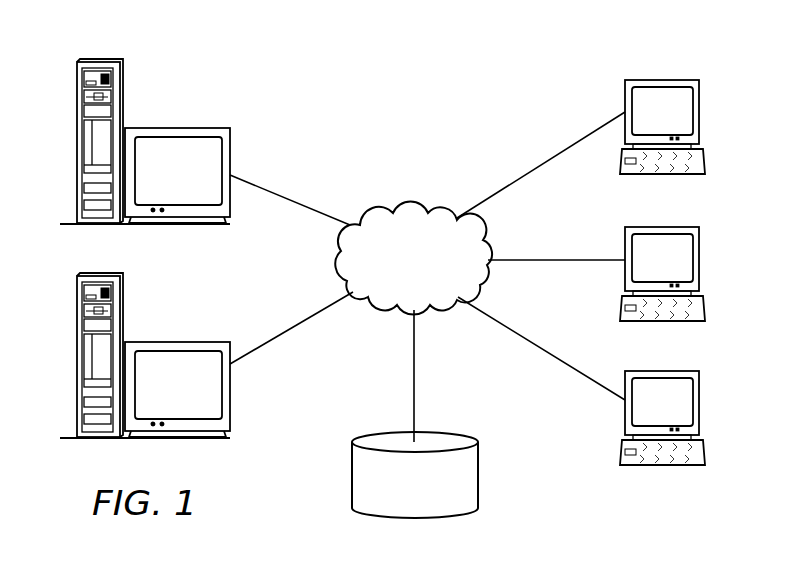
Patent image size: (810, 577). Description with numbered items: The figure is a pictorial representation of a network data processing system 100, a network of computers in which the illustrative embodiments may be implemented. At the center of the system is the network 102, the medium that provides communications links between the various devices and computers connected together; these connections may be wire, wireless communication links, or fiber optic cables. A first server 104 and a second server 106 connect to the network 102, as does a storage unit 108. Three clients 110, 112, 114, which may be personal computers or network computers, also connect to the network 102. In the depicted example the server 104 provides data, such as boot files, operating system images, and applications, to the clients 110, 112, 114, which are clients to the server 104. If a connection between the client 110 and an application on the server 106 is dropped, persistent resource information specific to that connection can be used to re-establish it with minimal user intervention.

The network data processing system 100 is at (306, 123).
The network 102 is at (386, 207).
The server 104 is at (77, 143).
The server 106 is at (77, 362).
The storage unit 108 is at (381, 432).
The client 110 is at (700, 113).
The client 112 is at (700, 260).
The client 114 is at (700, 400).